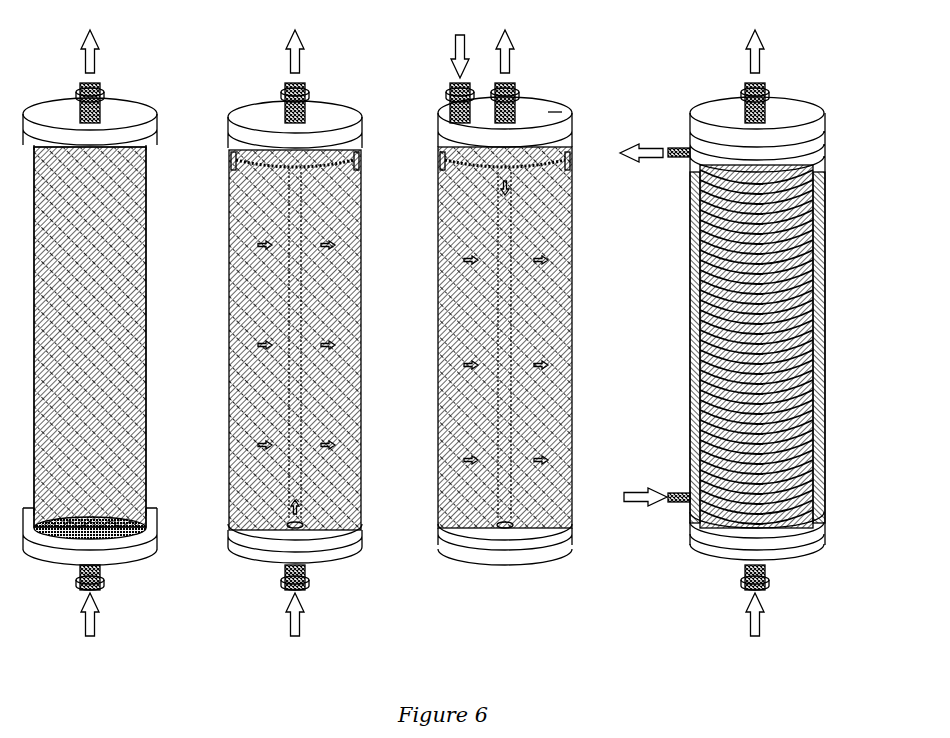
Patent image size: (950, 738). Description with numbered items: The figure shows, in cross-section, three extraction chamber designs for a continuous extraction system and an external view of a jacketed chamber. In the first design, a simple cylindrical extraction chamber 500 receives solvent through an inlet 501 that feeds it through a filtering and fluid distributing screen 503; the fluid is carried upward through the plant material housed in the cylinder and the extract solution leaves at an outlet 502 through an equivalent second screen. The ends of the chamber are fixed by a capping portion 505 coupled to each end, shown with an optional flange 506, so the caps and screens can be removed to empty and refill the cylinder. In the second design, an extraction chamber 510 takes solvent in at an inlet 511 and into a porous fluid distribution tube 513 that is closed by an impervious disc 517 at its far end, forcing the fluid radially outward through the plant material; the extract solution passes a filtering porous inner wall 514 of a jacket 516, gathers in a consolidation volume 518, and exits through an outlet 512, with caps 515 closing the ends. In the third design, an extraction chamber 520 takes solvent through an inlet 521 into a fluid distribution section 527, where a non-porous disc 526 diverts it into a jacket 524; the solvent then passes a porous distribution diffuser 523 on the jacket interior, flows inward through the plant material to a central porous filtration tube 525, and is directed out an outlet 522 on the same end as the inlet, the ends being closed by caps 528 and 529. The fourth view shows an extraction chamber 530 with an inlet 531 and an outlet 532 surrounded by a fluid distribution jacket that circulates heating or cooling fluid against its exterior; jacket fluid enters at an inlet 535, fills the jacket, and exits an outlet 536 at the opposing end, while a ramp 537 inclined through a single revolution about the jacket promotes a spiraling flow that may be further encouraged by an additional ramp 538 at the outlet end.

The cylindrical extraction chamber 500 is at (45, 61).
The inlet 501 is at (77, 573).
The outlet 502 is at (97, 115).
The filtering and fluid distributing screen 503 is at (108, 535).
The capping portion 505 is at (155, 128).
The flange 506 is at (157, 147).
The extraction chamber 510 is at (266, 62).
The inlet 511 is at (282, 573).
The outlet 512 is at (305, 115).
The porous fluid distribution tube 513 is at (286, 490).
The filtering porous inner wall 514 is at (229, 236).
The caps 515 is at (262, 110).
The jacket 516 is at (229, 330).
The impervious disc 517 is at (344, 181).
The consolidation volume 518 is at (357, 152).
The extraction chamber 520 is at (572, 61).
The inlet 521 is at (450, 112).
The outlet 522 is at (513, 112).
The porous distribution diffuser 523 is at (438, 265).
The jacket 524 is at (438, 322).
The central porous filtration tube 525 is at (496, 412).
The non-porous disc 526 is at (556, 186).
The fluid distribution section 527 is at (566, 150).
The cap 528 is at (555, 112).
The cap 529 is at (572, 545).
The extraction chamber 530 is at (830, 61).
The inlet 531 is at (745, 573).
The outlet 532 is at (745, 115).
The inlet 535 is at (688, 494).
The outlet 536 is at (686, 158).
The ramp 537 is at (775, 520).
The additional ramp 538 is at (825, 158).